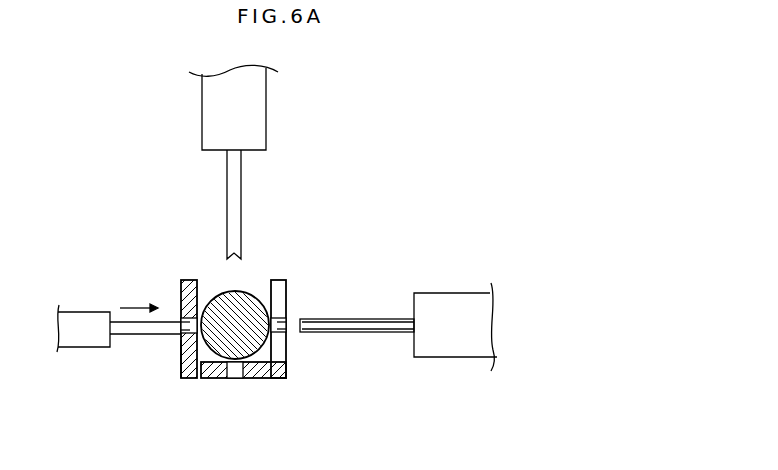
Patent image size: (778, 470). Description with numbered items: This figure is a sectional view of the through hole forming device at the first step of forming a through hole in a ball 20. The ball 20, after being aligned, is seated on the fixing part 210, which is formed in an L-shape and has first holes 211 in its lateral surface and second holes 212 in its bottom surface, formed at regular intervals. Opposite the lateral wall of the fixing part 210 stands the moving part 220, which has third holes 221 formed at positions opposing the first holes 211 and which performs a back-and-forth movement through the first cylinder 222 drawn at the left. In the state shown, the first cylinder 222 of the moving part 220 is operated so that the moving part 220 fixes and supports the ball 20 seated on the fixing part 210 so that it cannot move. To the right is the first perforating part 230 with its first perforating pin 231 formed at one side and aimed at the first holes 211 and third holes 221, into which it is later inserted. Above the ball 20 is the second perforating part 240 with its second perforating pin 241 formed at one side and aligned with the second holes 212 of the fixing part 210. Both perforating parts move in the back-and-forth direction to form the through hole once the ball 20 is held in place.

The ball 20 is at (212, 306).
The fixing part 210 is at (286, 290).
The first hole 211 is at (287, 352).
The second hole 212 is at (235, 378).
The moving part 220 is at (182, 288).
The third hole 221 is at (180, 350).
The first cylinder 222 is at (122, 335).
The first perforating part 230 is at (455, 345).
The first perforating pin 231 is at (350, 332).
The second perforating part 240 is at (252, 107).
The second perforating pin 241 is at (235, 183).